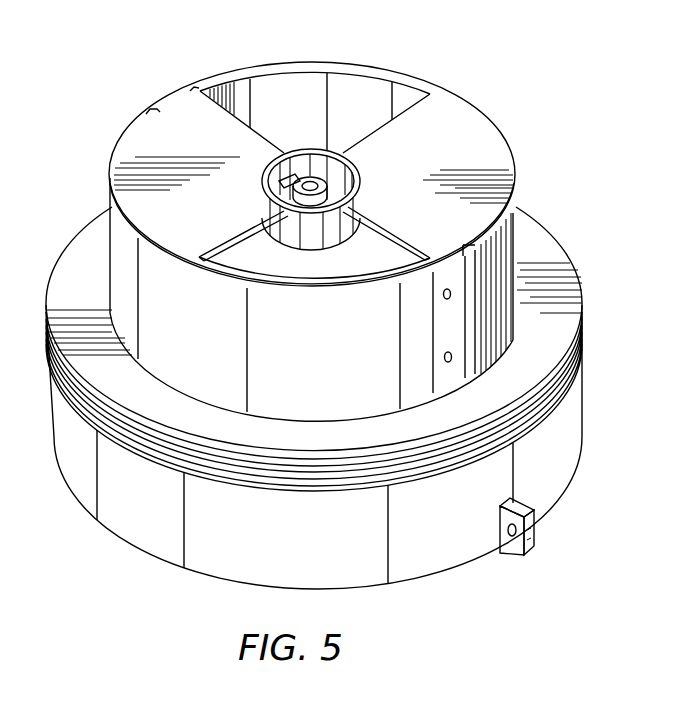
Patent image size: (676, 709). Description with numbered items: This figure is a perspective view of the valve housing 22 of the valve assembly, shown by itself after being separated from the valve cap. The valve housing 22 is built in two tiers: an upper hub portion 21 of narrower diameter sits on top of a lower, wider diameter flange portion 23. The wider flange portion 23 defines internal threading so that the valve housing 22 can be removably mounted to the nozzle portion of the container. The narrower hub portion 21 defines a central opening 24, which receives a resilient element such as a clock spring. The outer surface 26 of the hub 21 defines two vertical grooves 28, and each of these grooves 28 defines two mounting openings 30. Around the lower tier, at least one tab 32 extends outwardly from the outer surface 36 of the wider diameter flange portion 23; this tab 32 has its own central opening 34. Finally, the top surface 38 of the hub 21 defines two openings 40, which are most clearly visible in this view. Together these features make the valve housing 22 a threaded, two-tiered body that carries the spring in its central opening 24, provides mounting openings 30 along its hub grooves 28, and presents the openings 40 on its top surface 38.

The hub portion 21 is at (131, 247).
The valve housing 22 is at (125, 542).
The flange portion 23 is at (560, 325).
The central opening 24 is at (277, 187).
The outer surface 26 is at (308, 367).
The vertical grooves 28 is at (170, 107).
The mounting openings 30 is at (443, 357).
The tab 32 is at (541, 528).
The central opening 34 is at (512, 537).
The outer surface 36 is at (325, 542).
The top surface 38 is at (468, 152).
The openings 40 is at (313, 118).